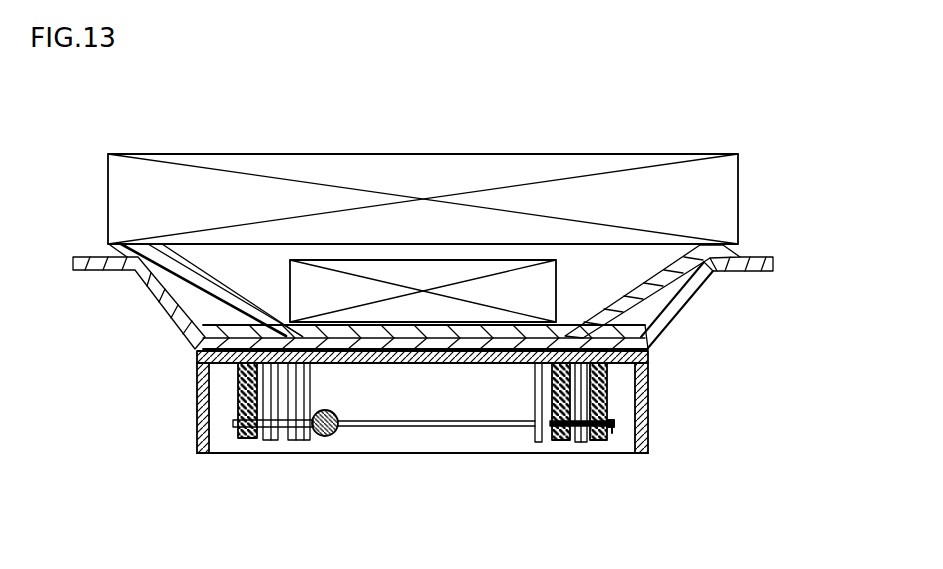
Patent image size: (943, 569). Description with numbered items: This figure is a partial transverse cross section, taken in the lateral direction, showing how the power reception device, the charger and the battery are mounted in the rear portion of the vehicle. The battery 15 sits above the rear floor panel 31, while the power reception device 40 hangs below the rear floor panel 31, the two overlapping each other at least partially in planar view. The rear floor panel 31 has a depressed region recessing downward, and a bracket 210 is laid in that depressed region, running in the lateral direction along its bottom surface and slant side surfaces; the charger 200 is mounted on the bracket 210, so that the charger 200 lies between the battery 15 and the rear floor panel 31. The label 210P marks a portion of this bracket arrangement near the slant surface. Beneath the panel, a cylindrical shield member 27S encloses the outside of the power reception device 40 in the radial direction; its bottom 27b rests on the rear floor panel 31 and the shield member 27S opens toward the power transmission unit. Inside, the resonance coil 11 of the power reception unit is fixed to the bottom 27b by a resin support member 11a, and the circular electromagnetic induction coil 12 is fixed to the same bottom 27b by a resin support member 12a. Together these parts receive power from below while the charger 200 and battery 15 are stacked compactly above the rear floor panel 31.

The battery 15 is at (483, 167).
The charger 200 is at (418, 280).
The bracket 210 is at (160, 246).
The diaphragm peripheral portion 210P is at (257, 287).
The rear floor panel 31 is at (113, 268).
The shield member 27S is at (210, 427).
The bottom 27b is at (430, 353).
The power reception device 40 is at (300, 475).
The support member 11a is at (563, 393).
The resonance coil 11 is at (570, 428).
The electromagnetic induction coil 12 is at (607, 423).
The support member 12a is at (595, 393).